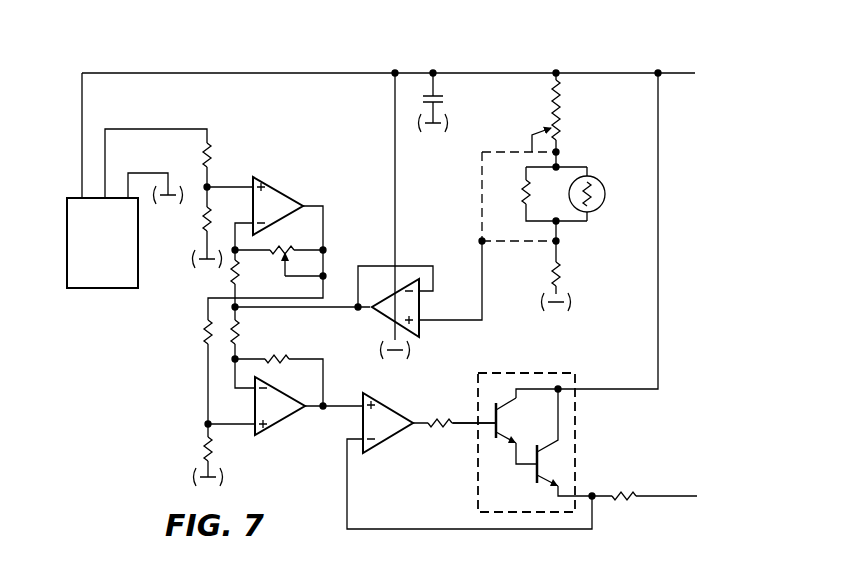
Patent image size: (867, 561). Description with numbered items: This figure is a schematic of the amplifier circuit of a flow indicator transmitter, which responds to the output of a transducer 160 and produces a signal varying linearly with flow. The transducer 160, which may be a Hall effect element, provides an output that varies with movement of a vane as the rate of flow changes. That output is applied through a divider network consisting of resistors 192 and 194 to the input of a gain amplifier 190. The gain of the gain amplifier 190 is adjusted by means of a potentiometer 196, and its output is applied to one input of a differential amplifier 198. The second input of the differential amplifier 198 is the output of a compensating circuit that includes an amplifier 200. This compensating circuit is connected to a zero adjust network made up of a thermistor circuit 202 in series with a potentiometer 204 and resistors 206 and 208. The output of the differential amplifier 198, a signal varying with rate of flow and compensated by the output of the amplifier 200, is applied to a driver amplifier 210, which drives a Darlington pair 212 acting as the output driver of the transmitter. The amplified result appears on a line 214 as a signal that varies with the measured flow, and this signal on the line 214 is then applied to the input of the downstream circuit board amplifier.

The transducer 160 is at (118, 262).
The gain amplifier 190 is at (296, 195).
The resistor 192 is at (208, 145).
The resistor 194 is at (205, 211).
The potentiometer 196 is at (290, 247).
The differential amplifier 198 is at (274, 427).
The amplifier 200 is at (375, 303).
The thermistor circuit 202 is at (572, 163).
The potentiometer 204 is at (560, 130).
The resistor 206 is at (553, 94).
The resistor 208 is at (561, 280).
The driver amplifier 210 is at (389, 412).
The Darlington pair 212 is at (540, 372).
The line 214 is at (654, 492).